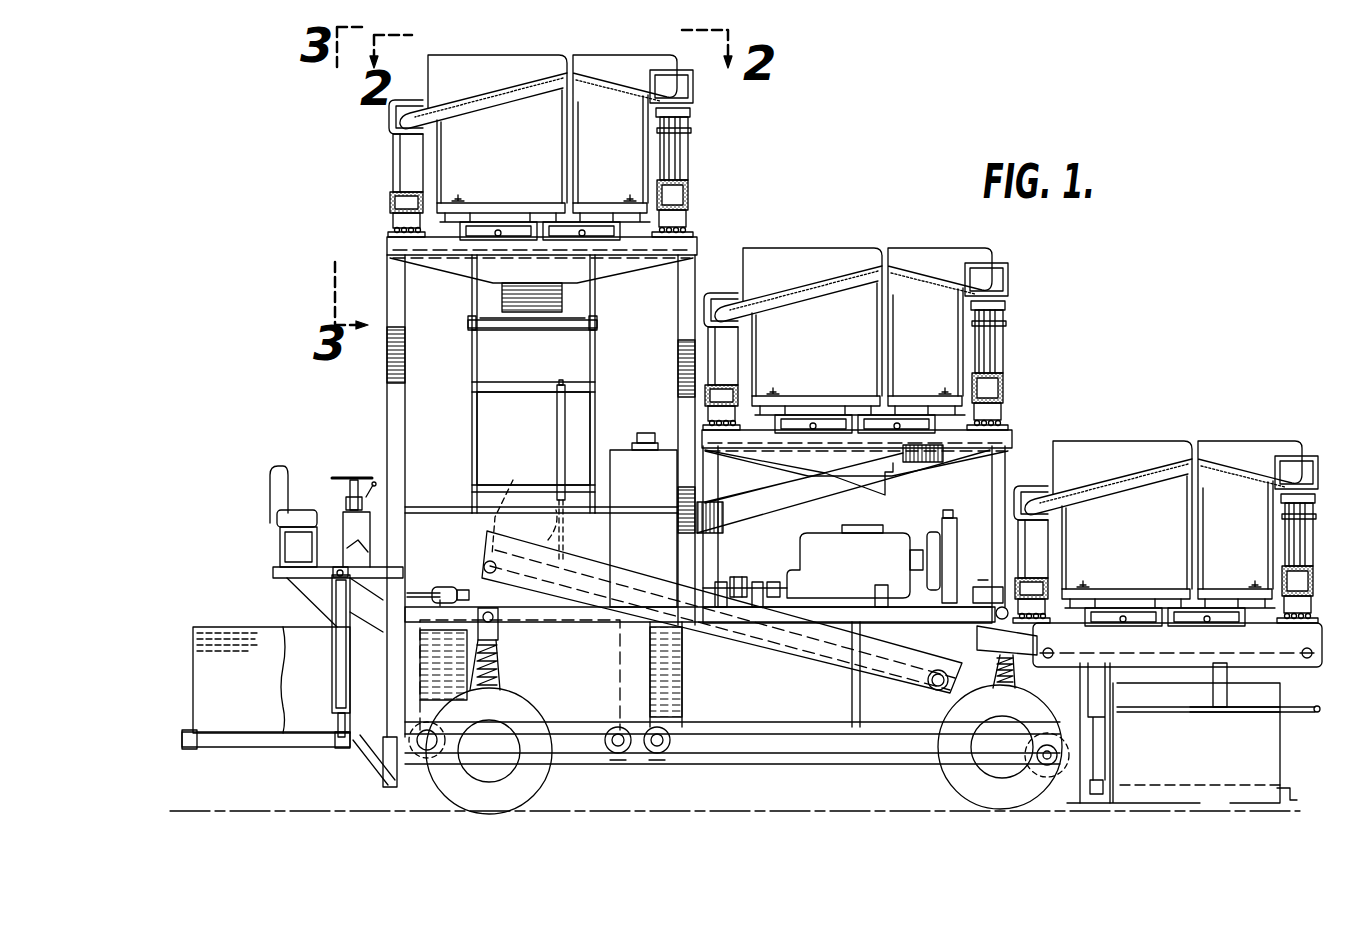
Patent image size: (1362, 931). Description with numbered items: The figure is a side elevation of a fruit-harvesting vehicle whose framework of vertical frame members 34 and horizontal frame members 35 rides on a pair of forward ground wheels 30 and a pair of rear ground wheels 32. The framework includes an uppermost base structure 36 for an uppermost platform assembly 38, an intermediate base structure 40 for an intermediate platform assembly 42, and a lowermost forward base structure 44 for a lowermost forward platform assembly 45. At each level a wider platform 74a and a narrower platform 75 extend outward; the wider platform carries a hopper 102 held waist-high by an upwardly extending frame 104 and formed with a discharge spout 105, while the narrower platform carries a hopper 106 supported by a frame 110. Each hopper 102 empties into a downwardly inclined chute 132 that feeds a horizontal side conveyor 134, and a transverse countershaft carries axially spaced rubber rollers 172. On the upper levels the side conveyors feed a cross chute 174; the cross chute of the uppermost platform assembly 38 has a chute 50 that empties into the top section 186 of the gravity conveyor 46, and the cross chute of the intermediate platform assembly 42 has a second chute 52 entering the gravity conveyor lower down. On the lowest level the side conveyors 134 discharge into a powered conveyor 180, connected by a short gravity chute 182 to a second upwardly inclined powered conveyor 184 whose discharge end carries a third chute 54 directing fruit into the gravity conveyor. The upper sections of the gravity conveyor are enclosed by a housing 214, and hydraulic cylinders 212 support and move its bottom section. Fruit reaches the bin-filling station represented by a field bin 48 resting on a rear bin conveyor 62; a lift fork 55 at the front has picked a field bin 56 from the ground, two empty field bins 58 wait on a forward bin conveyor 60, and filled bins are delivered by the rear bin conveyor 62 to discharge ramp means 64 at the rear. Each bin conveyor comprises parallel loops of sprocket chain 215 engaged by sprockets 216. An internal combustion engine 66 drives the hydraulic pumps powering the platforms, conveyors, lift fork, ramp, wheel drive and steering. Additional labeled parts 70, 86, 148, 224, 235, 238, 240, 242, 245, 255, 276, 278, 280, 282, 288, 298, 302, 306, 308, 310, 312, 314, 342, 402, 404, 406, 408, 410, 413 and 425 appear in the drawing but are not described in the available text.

The forward ground wheels 30 is at (972, 800).
The rear ground wheels 32 is at (462, 800).
The vertical frame members 34 is at (392, 398).
The horizontal frame members 35 is at (278, 575).
The uppermost base structure 36 is at (487, 240).
The uppermost platform assembly 38 is at (455, 154).
The intermediate base structure 40 is at (835, 444).
The intermediate platform assembly 42 is at (872, 238).
The lowermost forward base structure 44 is at (1130, 612).
The lowermost forward platform assembly 45 is at (1262, 440).
The gravity conveyor 46 is at (599, 390).
The field bin 48 is at (520, 675).
The chute 50 is at (555, 306).
The second chute 52 is at (548, 540).
The third chute 54 is at (506, 505).
The lift fork 55 is at (1133, 808).
The field bin 56 is at (1173, 743).
The empty field bins 58 is at (783, 674).
The forward bin conveyor 60 is at (760, 728).
The rear bin conveyor 62 is at (604, 720).
The discharge ramp means 64 is at (193, 748).
The internal combustion engine 66 is at (863, 566).
The tray 70 is at (548, 198).
The wider platform 74a is at (497, 205).
The narrower platform 75 is at (590, 203).
The knob 86 is at (462, 192).
The hopper 102 is at (796, 322).
The upwardly extending frame 104 is at (560, 118).
The discharge spout 105 is at (410, 113).
The hopper 106 is at (937, 321).
The frame 110 is at (644, 123).
The downwardly inclined chute 132 is at (390, 153).
The horizontal side conveyor 134 is at (390, 213).
The plate 148 is at (690, 113).
The rubber rollers 172 is at (684, 242).
The cross chute 174 is at (898, 498).
The powered conveyor 180 is at (1268, 662).
The short gravity chute 182 is at (985, 695).
The second upwardly inclined powered conveyor 184 is at (722, 612).
The top section 186 is at (498, 329).
The hydraulic cylinders 212 is at (567, 438).
The housing 214 is at (533, 438).
The sprocket chain 215 is at (548, 722).
The sprockets 216 is at (425, 752).
The foot 224 is at (1098, 808).
The cylinder 235 is at (1212, 684).
The bar 238 is at (1186, 712).
The rod 240 is at (1306, 716).
The post 242 is at (1100, 716).
The post lower 245 is at (1105, 756).
The step 255 is at (1283, 790).
The seat 276 is at (272, 502).
The console 278 is at (370, 520).
The steering wheel 280 is at (350, 476).
The lever 282 is at (374, 498).
The spring 288 is at (476, 660).
The spring mount 298 is at (496, 622).
The coupling 302 is at (467, 586).
The bracket 306 is at (992, 587).
The hose 308 is at (450, 585).
The cylinder 310 is at (952, 527).
The clutch 312 is at (740, 575).
The bearing 314 is at (718, 580).
The motor base 342 is at (703, 572).
The front beam 402 is at (186, 735).
The post 404 is at (385, 782).
The rod 406 is at (344, 725).
The rod end 408 is at (340, 722).
The hydraulic cylinder 410 is at (336, 645).
The blade box 413 is at (196, 665).
The strut 425 is at (358, 757).